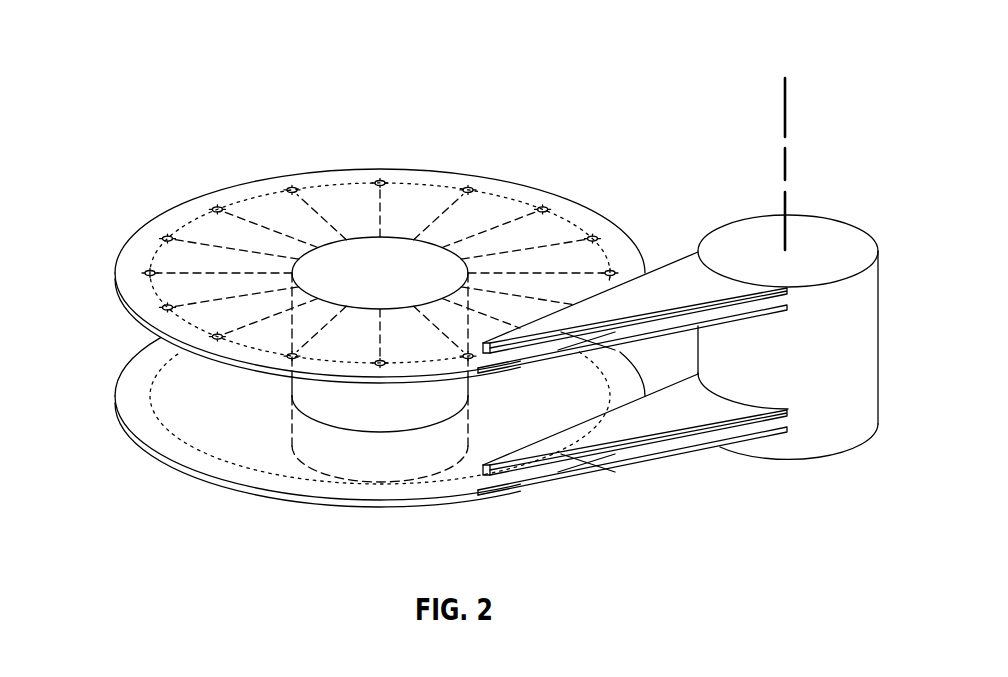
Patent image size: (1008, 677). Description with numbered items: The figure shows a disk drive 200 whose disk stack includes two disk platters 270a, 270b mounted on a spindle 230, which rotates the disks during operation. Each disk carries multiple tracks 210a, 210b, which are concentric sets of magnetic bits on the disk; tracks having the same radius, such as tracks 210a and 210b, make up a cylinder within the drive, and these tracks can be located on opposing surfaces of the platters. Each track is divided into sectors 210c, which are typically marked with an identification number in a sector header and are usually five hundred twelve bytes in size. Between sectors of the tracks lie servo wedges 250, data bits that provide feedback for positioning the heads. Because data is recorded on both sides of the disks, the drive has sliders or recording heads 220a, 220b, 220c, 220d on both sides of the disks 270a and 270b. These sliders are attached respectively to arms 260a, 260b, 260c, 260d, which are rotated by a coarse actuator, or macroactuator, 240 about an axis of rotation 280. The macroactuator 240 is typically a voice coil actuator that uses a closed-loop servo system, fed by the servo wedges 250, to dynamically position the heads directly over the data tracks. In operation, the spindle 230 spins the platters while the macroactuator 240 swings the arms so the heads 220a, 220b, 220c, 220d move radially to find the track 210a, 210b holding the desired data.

The disk drive 200 is at (516, 106).
The track 210a is at (185, 228).
The track 210b is at (235, 465).
The sector 210c is at (122, 297).
The slider 220a is at (489, 333).
The slider 220b is at (510, 480).
The slider 220c is at (512, 372).
The slider 220d is at (503, 497).
The spindle 230 is at (356, 256).
The macroactuator 240 is at (828, 211).
The servo wedges 250 is at (215, 346).
The arm 260a is at (662, 288).
The arm 260b is at (647, 423).
The arm 260c is at (730, 308).
The arm 260d is at (735, 430).
The disk platter 270a is at (248, 176).
The disk platter 270b is at (332, 510).
The axis of rotation 280 is at (782, 95).